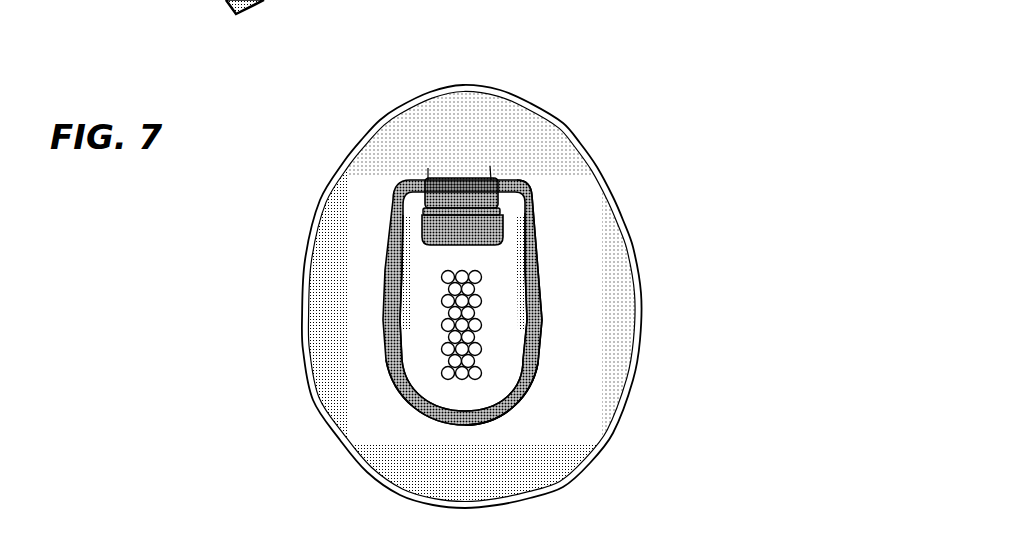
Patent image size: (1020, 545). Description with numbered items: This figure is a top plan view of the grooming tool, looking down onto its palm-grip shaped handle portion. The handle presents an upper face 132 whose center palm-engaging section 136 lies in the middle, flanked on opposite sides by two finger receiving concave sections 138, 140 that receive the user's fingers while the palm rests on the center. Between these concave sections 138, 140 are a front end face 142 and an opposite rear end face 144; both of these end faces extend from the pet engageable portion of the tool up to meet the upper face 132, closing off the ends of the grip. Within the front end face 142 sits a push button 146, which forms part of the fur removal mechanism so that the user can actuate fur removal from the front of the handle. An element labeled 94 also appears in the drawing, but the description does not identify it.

The adjacent component (partial, from FIG. 6) 94 is at (288, 0).
The housing body 132 is at (502, 357).
The bead chain / beaded element 136 is at (487, 405).
The right side of strap / retaining band 138 is at (533, 238).
The left side of strap / retaining band 140 is at (388, 236).
The cap 142 is at (435, 178).
The bottom of strap / retaining band 144 is at (462, 425).
The connector block 146 is at (467, 178).